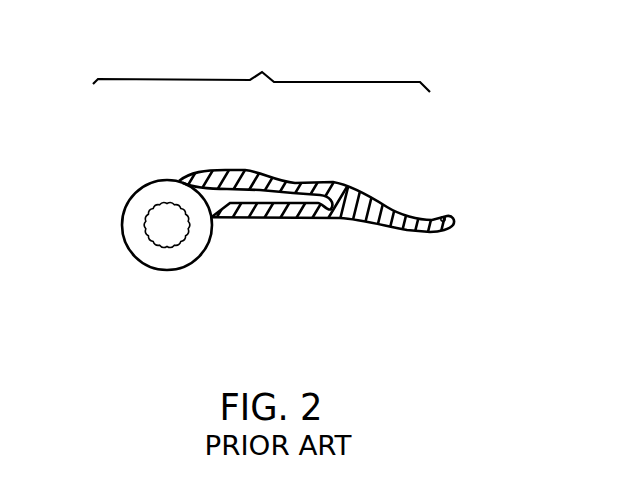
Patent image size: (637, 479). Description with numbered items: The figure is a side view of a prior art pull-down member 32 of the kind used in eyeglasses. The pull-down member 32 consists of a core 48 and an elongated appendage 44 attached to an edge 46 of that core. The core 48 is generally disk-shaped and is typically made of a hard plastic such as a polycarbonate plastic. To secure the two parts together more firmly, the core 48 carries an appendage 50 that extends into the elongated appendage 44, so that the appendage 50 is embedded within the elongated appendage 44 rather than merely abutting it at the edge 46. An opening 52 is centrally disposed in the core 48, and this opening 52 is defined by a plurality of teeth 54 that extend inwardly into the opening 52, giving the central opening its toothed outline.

The pull-down member 32 is at (261, 61).
The elongated appendage 44 is at (408, 232).
The edge 46 is at (208, 247).
The core 48 is at (143, 183).
The appendage 50 is at (242, 200).
The opening 52 is at (168, 228).
The teeth 54 is at (145, 217).